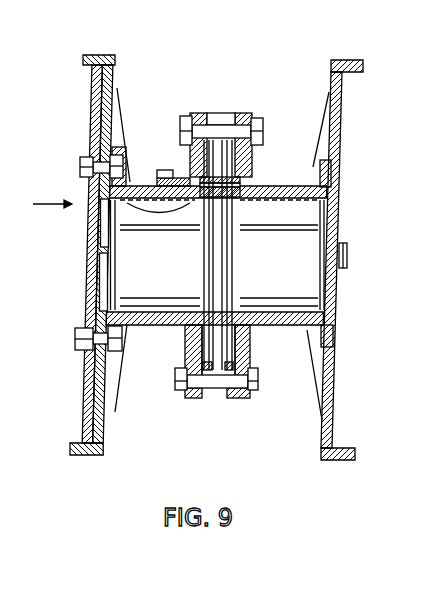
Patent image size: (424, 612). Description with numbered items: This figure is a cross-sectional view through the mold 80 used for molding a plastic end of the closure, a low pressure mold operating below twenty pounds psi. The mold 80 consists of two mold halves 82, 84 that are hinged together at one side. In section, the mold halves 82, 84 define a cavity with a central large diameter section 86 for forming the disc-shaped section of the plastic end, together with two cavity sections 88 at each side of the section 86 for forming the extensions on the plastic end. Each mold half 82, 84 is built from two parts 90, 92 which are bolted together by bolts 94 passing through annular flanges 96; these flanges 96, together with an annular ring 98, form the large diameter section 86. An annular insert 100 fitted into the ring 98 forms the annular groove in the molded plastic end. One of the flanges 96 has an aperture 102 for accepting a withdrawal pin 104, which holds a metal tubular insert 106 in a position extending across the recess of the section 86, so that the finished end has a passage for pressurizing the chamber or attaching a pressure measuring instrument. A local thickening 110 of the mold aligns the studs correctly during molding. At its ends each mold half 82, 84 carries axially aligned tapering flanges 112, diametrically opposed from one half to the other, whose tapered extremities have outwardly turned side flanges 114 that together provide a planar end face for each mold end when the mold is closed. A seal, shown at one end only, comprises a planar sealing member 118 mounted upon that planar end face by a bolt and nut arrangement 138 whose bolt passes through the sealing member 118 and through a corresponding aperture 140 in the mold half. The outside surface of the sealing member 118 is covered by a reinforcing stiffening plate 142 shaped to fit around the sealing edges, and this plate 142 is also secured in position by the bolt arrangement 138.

The mold 80 is at (230, 83).
The mold half 82 is at (292, 186).
The mold half 84 is at (299, 328).
The central large diameter section 86 is at (186, 345).
The cavity section 88 is at (162, 278).
The mold part 90 is at (138, 326).
The mold part 92 is at (272, 326).
The bolt 94 is at (266, 126).
The annular flange 96 is at (243, 116).
The annular ring 98 is at (219, 122).
The annular insert 100 is at (222, 300).
The aperture 102 is at (196, 158).
The withdrawal pin 104 is at (165, 176).
The metal tubular insert 106 is at (232, 204).
The local thickening 110 is at (346, 252).
The tapering flange 112 is at (113, 84).
The side flange 114 is at (86, 60).
The sealing member 118 is at (92, 120).
The bolt and nut arrangement 138 is at (80, 166).
The aperture 140 is at (124, 158).
The stiffening plate 142 is at (90, 206).